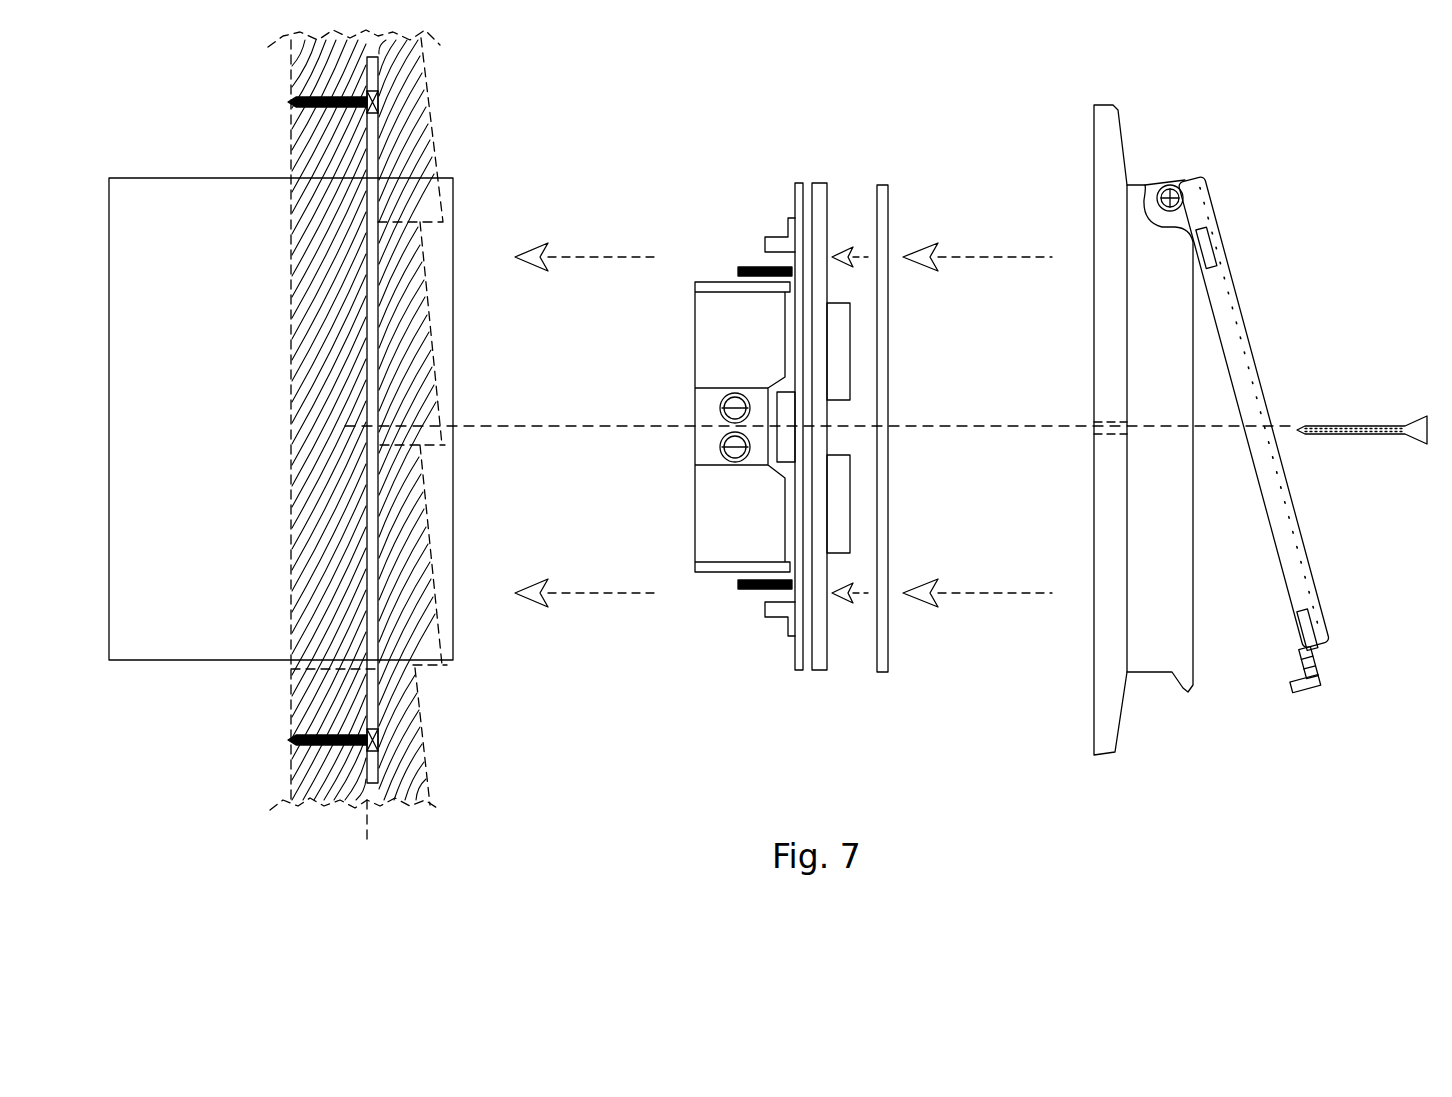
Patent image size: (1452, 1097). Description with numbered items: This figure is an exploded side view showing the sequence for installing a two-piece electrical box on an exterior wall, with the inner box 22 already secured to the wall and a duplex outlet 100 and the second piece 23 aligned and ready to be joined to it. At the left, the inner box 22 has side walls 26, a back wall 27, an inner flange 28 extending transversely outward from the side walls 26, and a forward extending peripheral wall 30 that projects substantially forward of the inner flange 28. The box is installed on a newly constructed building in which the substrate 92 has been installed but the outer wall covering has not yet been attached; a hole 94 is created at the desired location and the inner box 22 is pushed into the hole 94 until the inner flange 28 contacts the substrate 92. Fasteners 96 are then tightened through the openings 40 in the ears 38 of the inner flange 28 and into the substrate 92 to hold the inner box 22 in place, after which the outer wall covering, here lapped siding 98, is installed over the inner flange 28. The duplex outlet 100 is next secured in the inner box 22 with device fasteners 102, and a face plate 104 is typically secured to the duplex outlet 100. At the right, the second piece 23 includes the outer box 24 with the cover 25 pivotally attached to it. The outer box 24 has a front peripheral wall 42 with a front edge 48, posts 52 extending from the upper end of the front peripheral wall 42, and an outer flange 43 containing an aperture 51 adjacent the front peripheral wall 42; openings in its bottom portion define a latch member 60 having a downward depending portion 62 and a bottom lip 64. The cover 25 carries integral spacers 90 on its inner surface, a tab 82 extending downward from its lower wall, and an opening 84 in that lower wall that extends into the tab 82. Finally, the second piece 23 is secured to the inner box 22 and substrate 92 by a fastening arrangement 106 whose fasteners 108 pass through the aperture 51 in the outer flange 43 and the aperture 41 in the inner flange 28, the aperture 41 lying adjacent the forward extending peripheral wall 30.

The inner box 22 is at (193, 178).
The second piece 23 is at (1300, 180).
The outer box 24 is at (1081, 430).
The cover 25 is at (1297, 444).
The side walls 26 is at (226, 412).
The back wall 27 is at (111, 310).
The inner flange 28 is at (370, 223).
The forward extending peripheral wall 30 is at (445, 250).
The ears 38 is at (380, 775).
The openings 40 is at (365, 727).
The aperture 41 is at (380, 427).
The front peripheral wall 42 is at (1176, 380).
The outer flange 43 is at (1123, 337).
The front edge 48 is at (1195, 541).
The aperture 51 is at (1085, 430).
The posts 52 is at (1163, 185).
The latch member 60 is at (1178, 686).
The downward depending portion 62 is at (1192, 672).
The bottom lip 64 is at (1190, 690).
The tab 82 is at (1305, 684).
The opening 84 is at (1308, 663).
The integral spacers 90 is at (1257, 438).
The substrate 92 is at (310, 58).
The hole 94 is at (328, 669).
The fasteners 96 is at (380, 100).
The lapped siding 98 is at (407, 538).
The duplex outlet 100 is at (758, 348).
The device fasteners 102 is at (745, 268).
The face plate 104 is at (878, 185).
The fastening arrangement 106 is at (1355, 418).
The fasteners 108 is at (1405, 437).